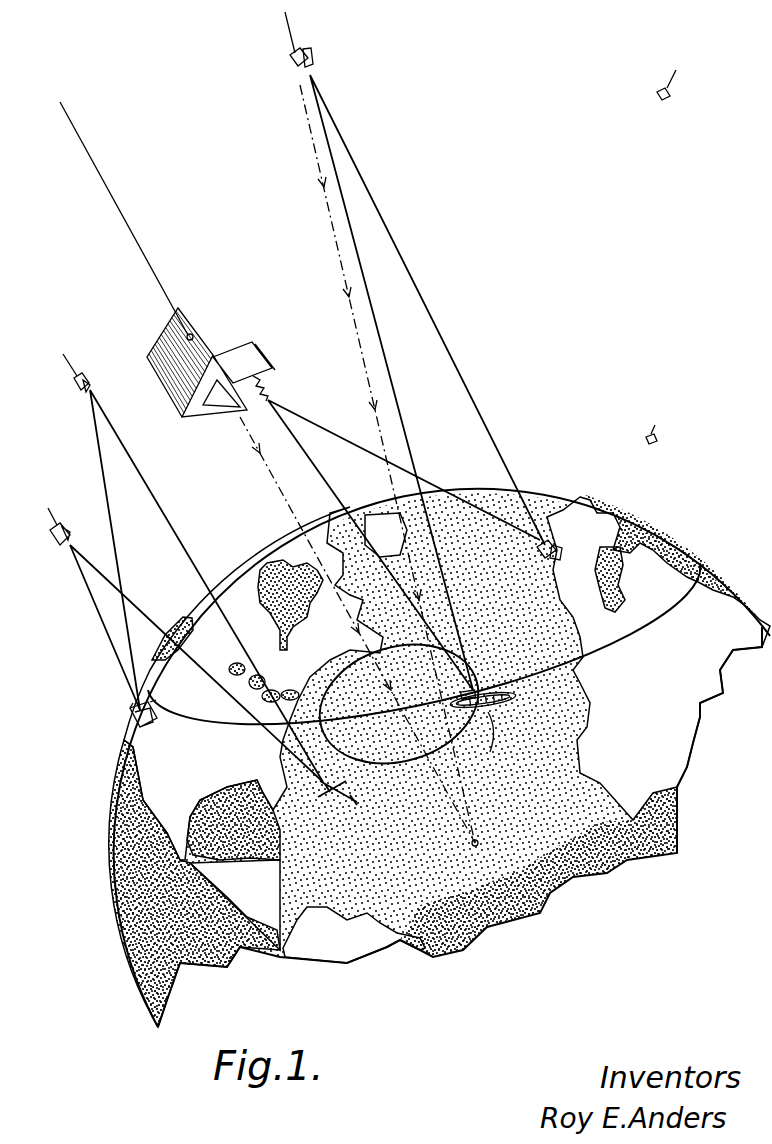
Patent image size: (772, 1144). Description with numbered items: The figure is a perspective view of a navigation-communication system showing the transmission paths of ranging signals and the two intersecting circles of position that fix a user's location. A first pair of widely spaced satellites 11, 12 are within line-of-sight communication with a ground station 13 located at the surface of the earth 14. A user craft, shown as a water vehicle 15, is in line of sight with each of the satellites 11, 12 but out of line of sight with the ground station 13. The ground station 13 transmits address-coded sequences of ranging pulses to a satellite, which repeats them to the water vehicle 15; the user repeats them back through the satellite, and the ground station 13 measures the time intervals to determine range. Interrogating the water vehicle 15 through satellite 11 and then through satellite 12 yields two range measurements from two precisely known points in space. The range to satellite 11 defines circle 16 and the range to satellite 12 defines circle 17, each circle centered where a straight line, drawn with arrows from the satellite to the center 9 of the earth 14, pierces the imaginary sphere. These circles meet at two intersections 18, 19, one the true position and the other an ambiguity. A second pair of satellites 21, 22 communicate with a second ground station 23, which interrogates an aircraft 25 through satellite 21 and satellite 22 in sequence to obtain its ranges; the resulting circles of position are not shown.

The center of the earth 9 is at (478, 840).
The satellite 11 is at (312, 60).
The satellite 12 is at (203, 345).
The ground station 13 is at (560, 560).
The earth 14 is at (107, 897).
The water vehicle 15 is at (488, 712).
The circle of position 16 is at (623, 647).
The circle of position 17 is at (413, 757).
The intersection 18 is at (477, 687).
The intersection 19 is at (330, 733).
The satellite 21 is at (86, 374).
The satellite 22 is at (58, 527).
The second ground station 23 is at (128, 717).
The aircraft 25 is at (353, 792).